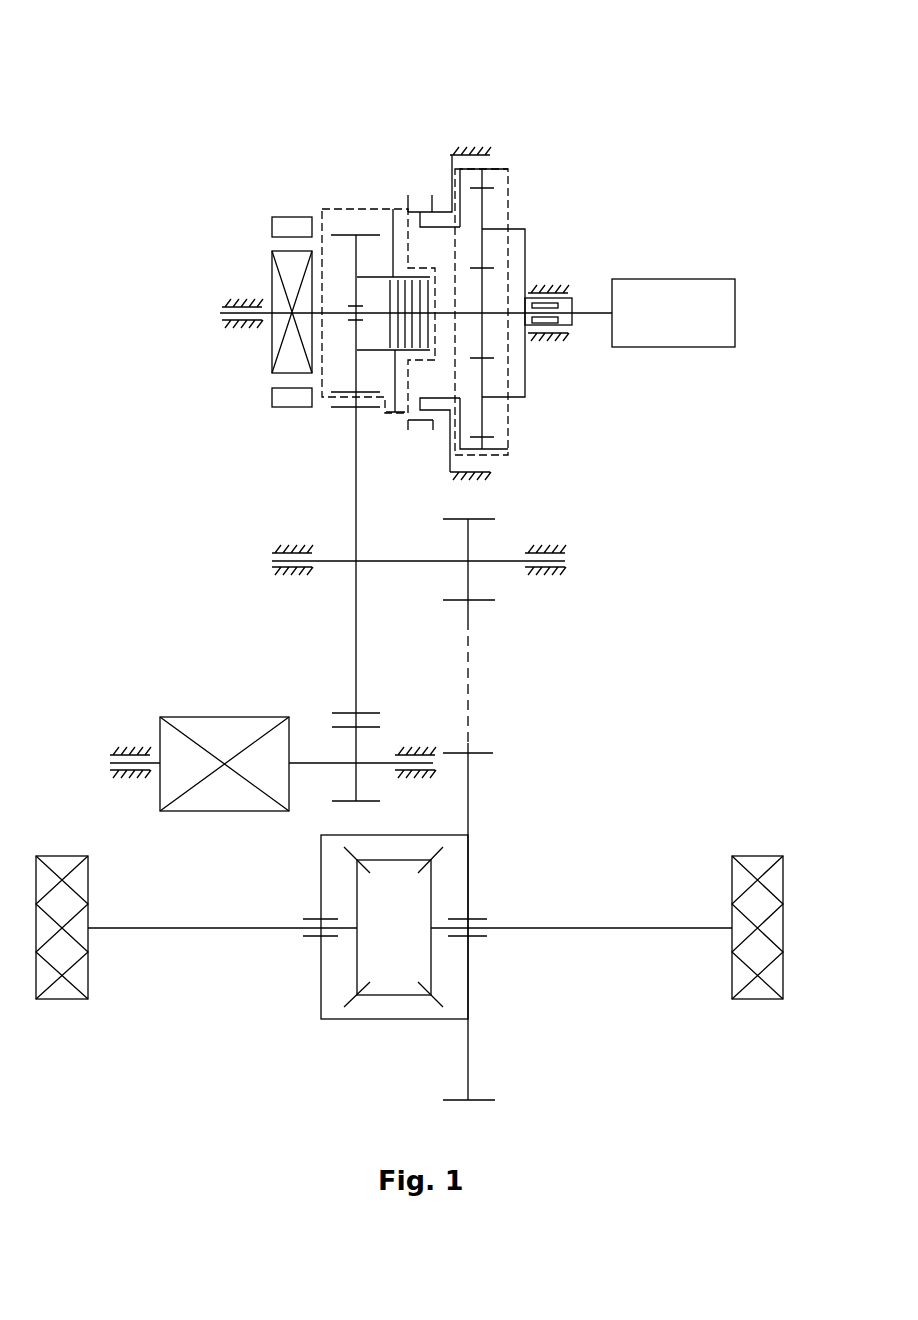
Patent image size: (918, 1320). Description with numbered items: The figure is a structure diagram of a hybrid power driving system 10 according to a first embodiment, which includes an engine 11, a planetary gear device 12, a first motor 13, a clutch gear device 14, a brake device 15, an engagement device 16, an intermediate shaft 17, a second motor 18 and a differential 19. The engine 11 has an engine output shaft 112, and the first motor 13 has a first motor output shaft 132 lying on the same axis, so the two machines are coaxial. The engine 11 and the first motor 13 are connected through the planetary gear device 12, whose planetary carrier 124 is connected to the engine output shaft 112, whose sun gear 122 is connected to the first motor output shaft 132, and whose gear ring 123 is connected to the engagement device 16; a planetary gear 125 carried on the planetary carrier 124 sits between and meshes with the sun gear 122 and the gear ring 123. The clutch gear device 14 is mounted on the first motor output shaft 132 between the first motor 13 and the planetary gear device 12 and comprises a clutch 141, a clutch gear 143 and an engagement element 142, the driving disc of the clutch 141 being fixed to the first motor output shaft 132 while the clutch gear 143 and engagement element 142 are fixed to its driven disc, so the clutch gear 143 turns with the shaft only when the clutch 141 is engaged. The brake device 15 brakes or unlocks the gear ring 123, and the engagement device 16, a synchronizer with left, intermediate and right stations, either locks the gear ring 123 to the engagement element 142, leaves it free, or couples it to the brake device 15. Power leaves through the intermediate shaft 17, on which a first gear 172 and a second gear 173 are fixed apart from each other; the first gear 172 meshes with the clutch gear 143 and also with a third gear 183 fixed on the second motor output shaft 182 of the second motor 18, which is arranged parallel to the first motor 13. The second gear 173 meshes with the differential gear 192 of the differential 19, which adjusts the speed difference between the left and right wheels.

The hybrid power driving system 10 is at (424, 40).
The engine 11 is at (710, 279).
The engine output shaft 112 is at (597, 318).
The planetary gear device 12 is at (551, 264).
The sun gear 122 is at (484, 333).
The gear ring 123 is at (503, 170).
The planetary carrier 124 is at (526, 243).
The planetary gear 125 is at (483, 216).
The first motor 13 is at (251, 340).
The first motor output shaft 132 is at (314, 355).
The clutch gear device 14 is at (344, 432).
The clutch 141 is at (388, 406).
The engagement element 142 is at (393, 209).
The clutch gear 143 is at (340, 231).
The brake device 15 is at (450, 185).
The engagement device 16 is at (423, 432).
The intermediate shaft 17 is at (431, 617).
The first gear 172 is at (356, 516).
The second gear 173 is at (469, 584).
The second motor 18 is at (301, 746).
The second motor output shaft 182 is at (308, 762).
The third gear 183 is at (355, 789).
The differential 19 is at (409, 937).
The differential gear 192 is at (470, 1040).